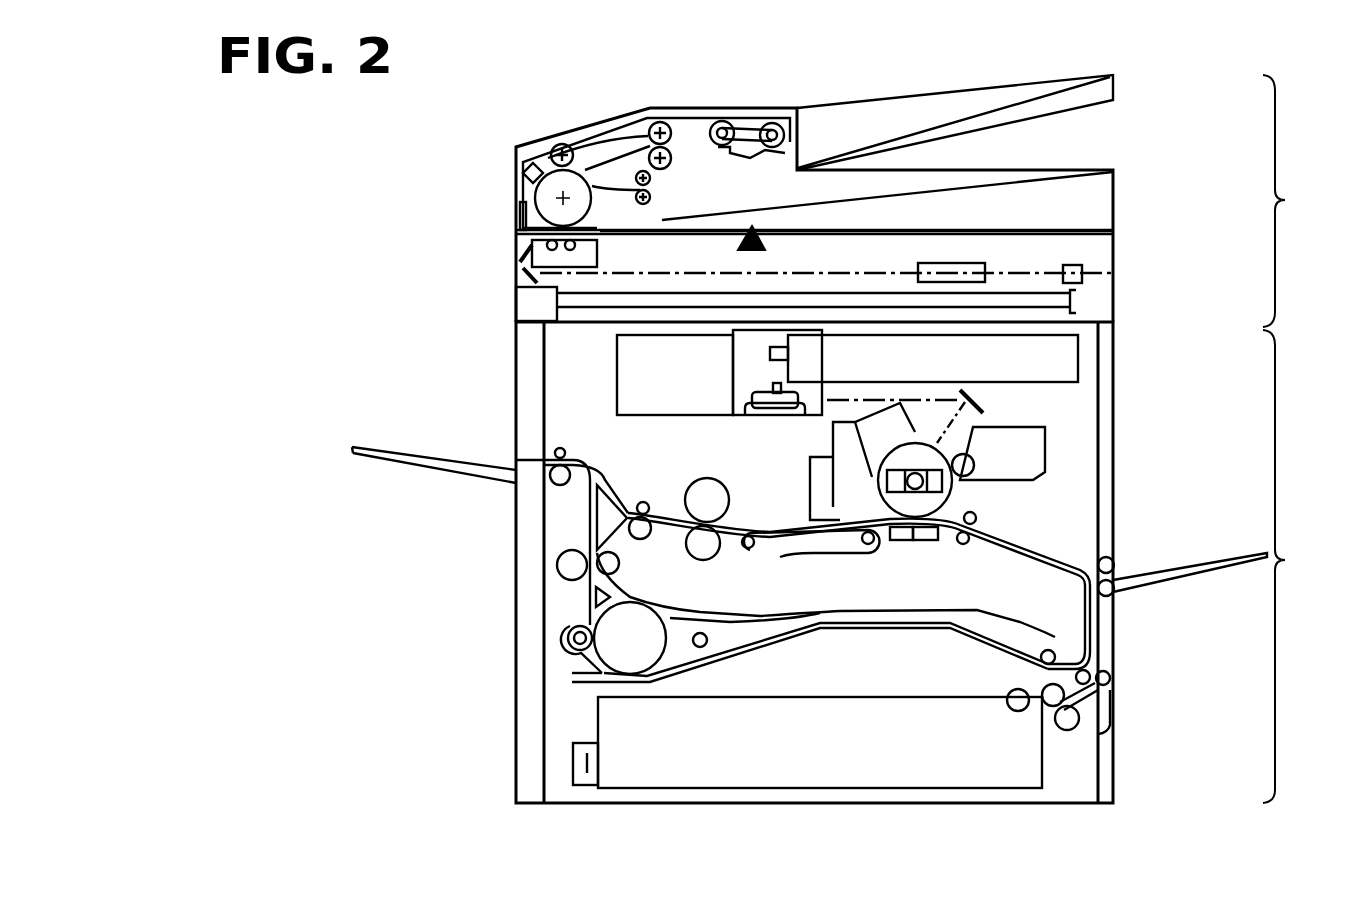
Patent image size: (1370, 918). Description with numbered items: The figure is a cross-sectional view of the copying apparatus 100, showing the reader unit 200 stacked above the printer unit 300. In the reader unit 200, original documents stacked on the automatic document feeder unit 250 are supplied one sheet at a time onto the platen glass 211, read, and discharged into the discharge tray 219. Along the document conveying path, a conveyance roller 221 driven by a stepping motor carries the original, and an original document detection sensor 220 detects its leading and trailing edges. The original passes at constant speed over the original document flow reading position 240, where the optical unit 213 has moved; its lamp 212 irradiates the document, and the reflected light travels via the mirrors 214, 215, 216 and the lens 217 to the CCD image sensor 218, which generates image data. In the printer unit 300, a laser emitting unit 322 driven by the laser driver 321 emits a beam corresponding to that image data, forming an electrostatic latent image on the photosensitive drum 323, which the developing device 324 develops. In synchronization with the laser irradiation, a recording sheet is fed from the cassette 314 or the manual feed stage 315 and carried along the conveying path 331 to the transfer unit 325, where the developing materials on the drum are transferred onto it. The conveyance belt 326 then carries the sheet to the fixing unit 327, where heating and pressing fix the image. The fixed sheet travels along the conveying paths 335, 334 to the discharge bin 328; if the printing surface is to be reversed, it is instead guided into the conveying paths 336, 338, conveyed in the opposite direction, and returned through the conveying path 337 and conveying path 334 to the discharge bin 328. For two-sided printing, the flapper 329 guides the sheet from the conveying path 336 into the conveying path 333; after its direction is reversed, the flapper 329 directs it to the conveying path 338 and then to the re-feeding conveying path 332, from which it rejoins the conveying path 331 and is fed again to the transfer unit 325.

The copying apparatus 100 is at (718, 828).
The reader unit 200 is at (1301, 201).
The printer unit 300 is at (1301, 566).
The platen glass 211 is at (1078, 230).
The lamp 212 is at (525, 226).
The optical unit 213 is at (583, 247).
The mirror 214 is at (597, 253).
The mirror 215 is at (527, 248).
The mirror 216 is at (525, 278).
The lens 217 is at (967, 262).
The CCD image sensor 218 is at (1082, 273).
The discharge tray 219 is at (1025, 178).
The original document detection sensor 220 is at (515, 160).
The conveyance roller 221 is at (552, 172).
The original document flow reading position 240 is at (754, 222).
The automatic document feeder unit 250 is at (802, 142).
The cassette 314 is at (598, 717).
The manual feed stage 315 is at (1113, 577).
The laser driver 321 is at (615, 380).
The laser emitting unit 322 is at (777, 412).
The photosensitive drum 323 is at (877, 489).
The developing device 324 is at (1047, 450).
The transfer unit 325 is at (922, 540).
The conveyance belt 326 is at (837, 545).
The fixing unit 327 is at (705, 488).
The discharge bin 328 is at (398, 452).
The flapper 329 is at (593, 593).
The conveying path 331 is at (1010, 538).
The re-feeding conveying path 332 is at (747, 647).
The conveying path 333 is at (732, 617).
The conveying path 334 is at (515, 463).
The conveying path 335 is at (623, 455).
The conveying path 336 is at (620, 545).
The conveying path 337 is at (590, 523).
The conveying path 338 is at (570, 630).